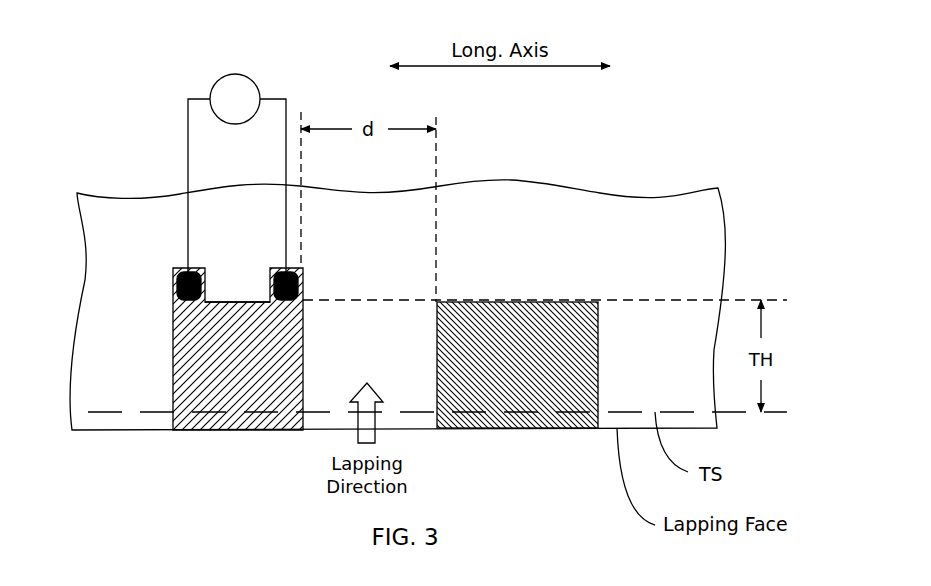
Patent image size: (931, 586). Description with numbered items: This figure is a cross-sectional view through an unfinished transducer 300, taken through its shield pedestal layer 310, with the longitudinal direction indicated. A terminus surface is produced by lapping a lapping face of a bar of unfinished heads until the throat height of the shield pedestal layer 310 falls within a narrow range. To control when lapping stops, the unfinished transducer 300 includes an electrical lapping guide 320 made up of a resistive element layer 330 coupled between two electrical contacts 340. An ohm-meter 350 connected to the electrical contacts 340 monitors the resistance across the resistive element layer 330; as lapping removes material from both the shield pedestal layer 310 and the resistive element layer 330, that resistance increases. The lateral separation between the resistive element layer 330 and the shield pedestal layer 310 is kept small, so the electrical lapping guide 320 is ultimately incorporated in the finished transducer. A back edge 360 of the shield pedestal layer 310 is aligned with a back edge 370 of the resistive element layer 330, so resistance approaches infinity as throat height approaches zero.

The unfinished transducer 300 is at (616, 192).
The shield pedestal layer 310 is at (508, 428).
The electrical lapping guide 320 is at (148, 313).
The resistive element layer 330 is at (205, 430).
The electrical contacts 340 is at (173, 287).
The ohm-meter 350 is at (249, 78).
The back edge of the shield pedestal layer 360 is at (517, 301).
The back edge of the resistive element layer 370 is at (229, 301).